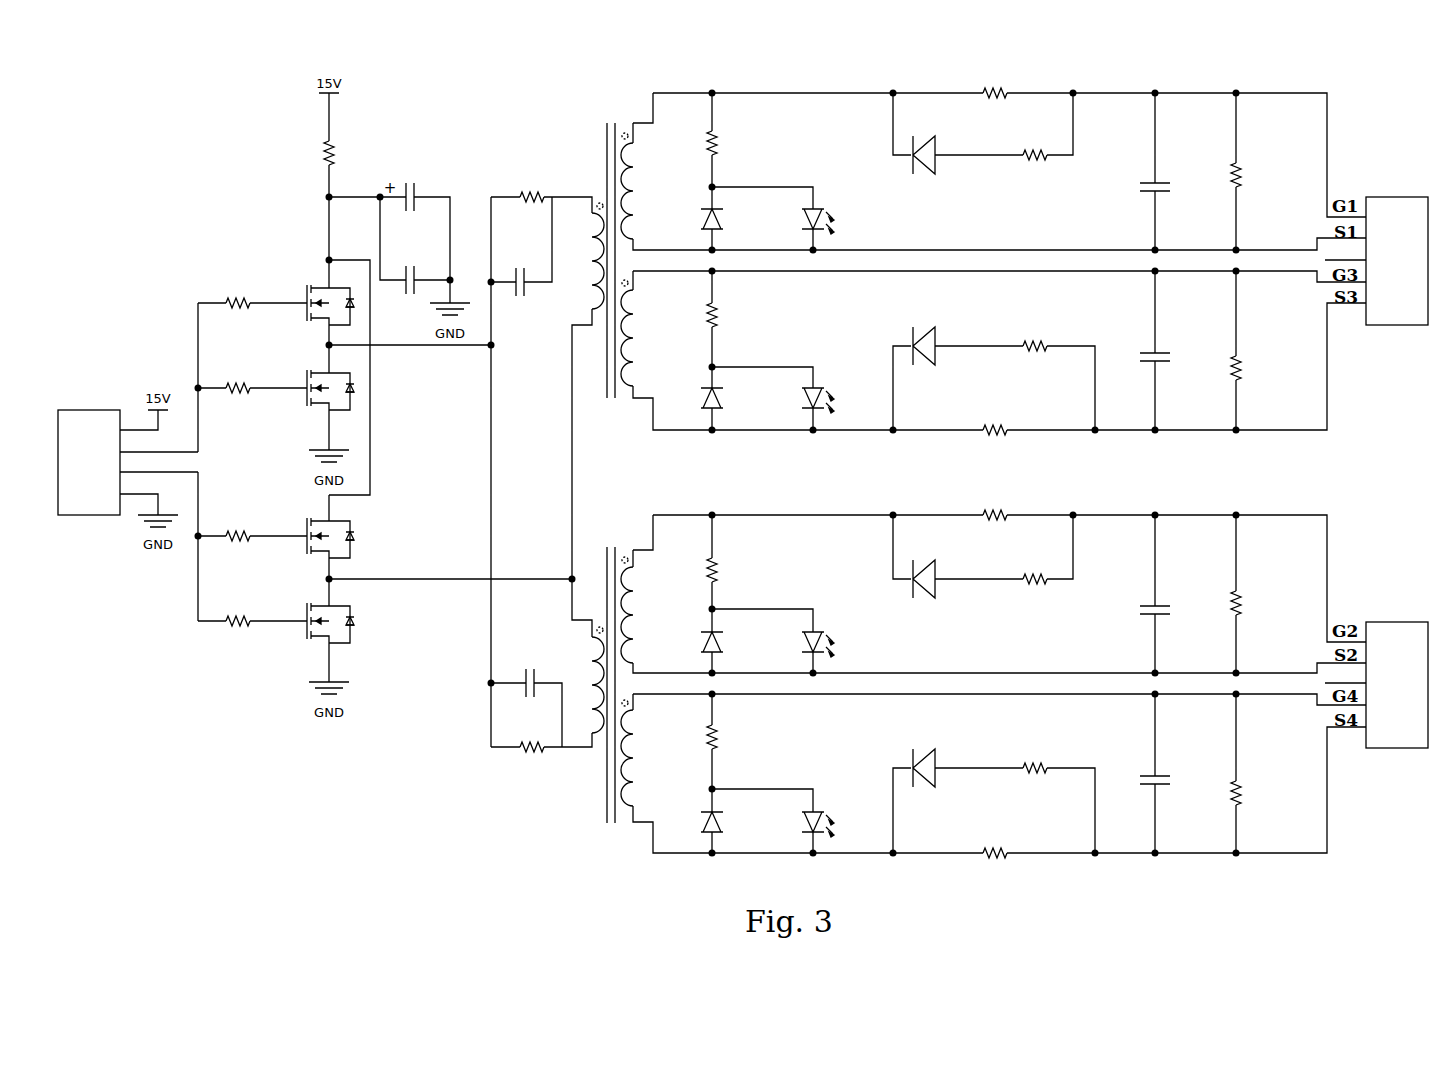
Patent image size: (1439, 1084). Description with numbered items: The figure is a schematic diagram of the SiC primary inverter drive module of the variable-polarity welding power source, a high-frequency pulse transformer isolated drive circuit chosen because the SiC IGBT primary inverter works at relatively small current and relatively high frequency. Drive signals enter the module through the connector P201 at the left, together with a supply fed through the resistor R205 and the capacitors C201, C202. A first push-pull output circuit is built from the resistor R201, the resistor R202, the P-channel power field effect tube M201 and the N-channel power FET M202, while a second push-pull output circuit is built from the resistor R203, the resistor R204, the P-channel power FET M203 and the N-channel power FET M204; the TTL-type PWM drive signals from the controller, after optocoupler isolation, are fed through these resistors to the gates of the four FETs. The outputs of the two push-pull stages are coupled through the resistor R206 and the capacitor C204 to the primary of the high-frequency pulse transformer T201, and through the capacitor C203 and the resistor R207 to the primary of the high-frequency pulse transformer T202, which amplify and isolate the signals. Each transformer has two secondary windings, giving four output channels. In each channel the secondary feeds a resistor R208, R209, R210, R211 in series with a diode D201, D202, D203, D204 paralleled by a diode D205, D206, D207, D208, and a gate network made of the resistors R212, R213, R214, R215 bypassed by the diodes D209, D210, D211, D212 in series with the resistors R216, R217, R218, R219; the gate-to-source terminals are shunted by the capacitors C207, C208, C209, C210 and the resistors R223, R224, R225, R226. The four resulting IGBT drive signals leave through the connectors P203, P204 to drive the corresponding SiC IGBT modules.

The resistor R201 is at (235, 293).
The resistor R202 is at (237, 378).
The resistor R203 is at (237, 526).
The resistor R204 is at (237, 611).
The supply resistor R205 is at (347, 151).
The primary damping resistor R206 is at (529, 186).
The primary damping resistor R207 is at (529, 761).
The electrolytic decoupling capacitor C201 is at (411, 187).
The decoupling capacitor C202 is at (411, 270).
The primary coupling capacitor C203 is at (527, 676).
The primary coupling capacitor C204 is at (525, 276).
The P-channel power field effect tube M201 is at (312, 306).
The N-channel power FET M202 is at (312, 391).
The P-channel power FET M203 is at (312, 547).
The N-channel power FET M204 is at (312, 632).
The input connector P201 is at (89, 452).
The high-frequency pulse transformer T201 is at (611, 236).
The high-frequency pulse transformer T202 is at (611, 667).
The secondary resistor R208 is at (731, 143).
The secondary resistor R209 is at (731, 309).
The secondary resistor R210 is at (732, 572).
The secondary resistor R211 is at (732, 737).
The zener diode D201 is at (730, 219).
The zener diode D202 is at (730, 407).
The zener diode D203 is at (730, 649).
The zener diode D204 is at (730, 822).
The light emitting diode D205 is at (841, 221).
The light emitting diode D206 is at (842, 397).
The light emitting diode D207 is at (843, 639).
The light emitting diode D208 is at (842, 824).
The gate discharge diode D209 is at (922, 145).
The gate discharge diode D210 is at (922, 339).
The gate discharge diode D211 is at (922, 585).
The gate discharge diode D212 is at (922, 779).
The gate drive resistor R212 is at (992, 82).
The gate drive resistor R213 is at (992, 420).
The gate drive resistor R214 is at (992, 504).
The gate drive resistor R215 is at (987, 842).
The gate discharge resistor R216 is at (1032, 144).
The gate discharge resistor R217 is at (1032, 338).
The gate discharge resistor R218 is at (1035, 569).
The gate discharge resistor R219 is at (1032, 758).
The gate-source capacitor C207 is at (1173, 187).
The gate-source capacitor C208 is at (1173, 352).
The gate-source capacitor C209 is at (1173, 620).
The gate-source capacitor C210 is at (1173, 785).
The gate-source resistor R223 is at (1255, 173).
The gate-source resistor R224 is at (1255, 368).
The gate-source resistor R225 is at (1255, 603).
The gate-source resistor R226 is at (1255, 799).
The output connector P203 is at (1397, 251).
The output connector P204 is at (1397, 664).